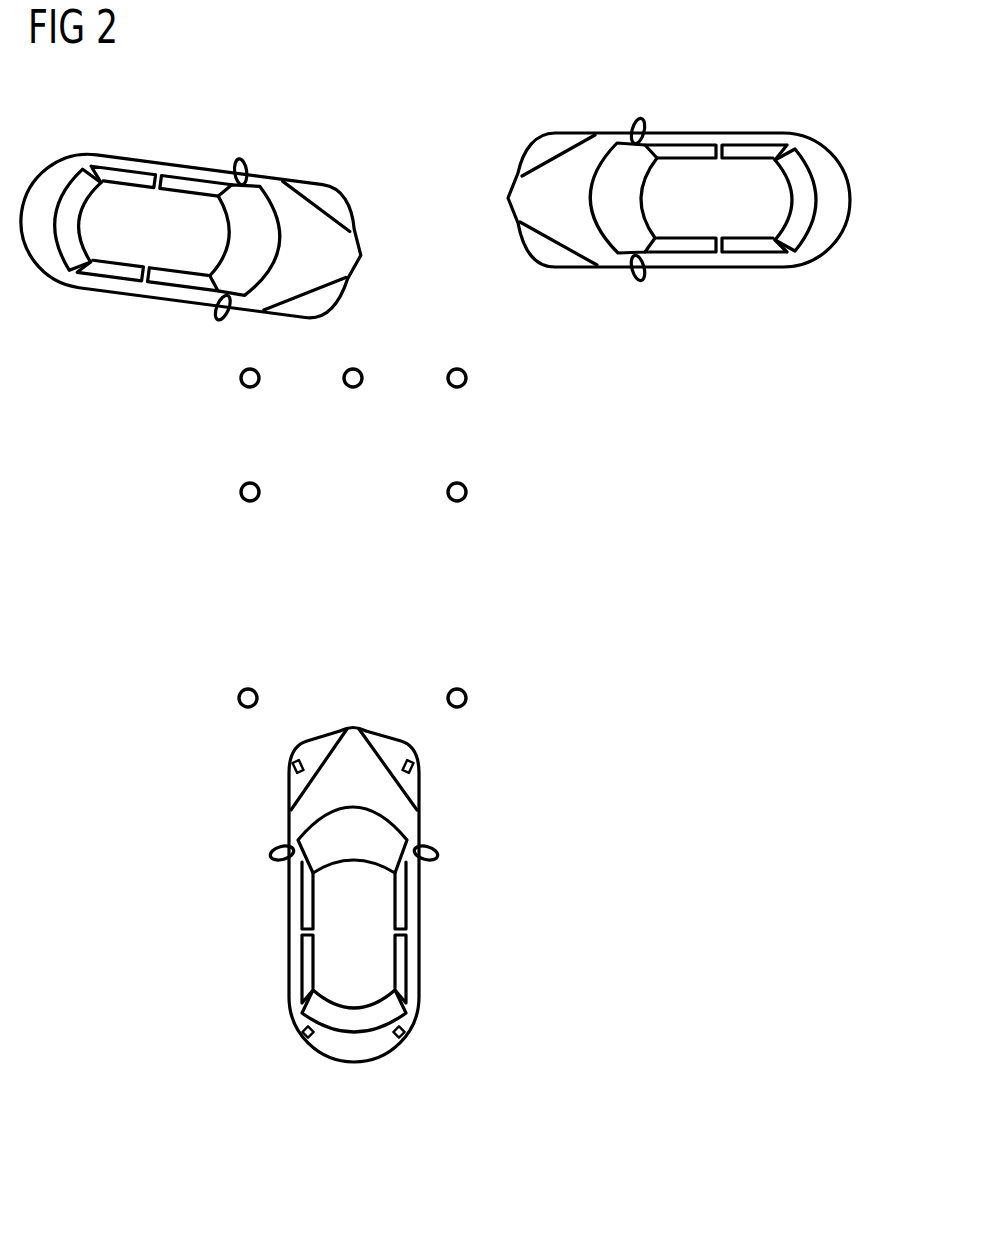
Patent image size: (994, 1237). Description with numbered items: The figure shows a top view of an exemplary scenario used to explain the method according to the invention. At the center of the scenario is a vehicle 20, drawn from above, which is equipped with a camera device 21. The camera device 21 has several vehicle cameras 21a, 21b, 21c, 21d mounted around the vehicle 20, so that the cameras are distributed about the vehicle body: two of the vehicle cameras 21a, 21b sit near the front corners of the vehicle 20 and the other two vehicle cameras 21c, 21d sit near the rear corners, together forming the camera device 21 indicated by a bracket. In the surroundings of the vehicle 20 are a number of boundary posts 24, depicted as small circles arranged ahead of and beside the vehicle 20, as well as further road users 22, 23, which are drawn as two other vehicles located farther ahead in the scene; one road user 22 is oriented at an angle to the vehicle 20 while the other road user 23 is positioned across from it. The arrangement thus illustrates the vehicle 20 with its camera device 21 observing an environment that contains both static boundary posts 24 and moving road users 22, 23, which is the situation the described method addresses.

The vehicle 20 is at (415, 882).
The camera device 21 is at (444, 879).
The vehicle camera 21a is at (303, 765).
The vehicle camera 21b is at (417, 768).
The vehicle camera 21c is at (465, 1001).
The vehicle camera 21d is at (308, 1022).
The road user 22 is at (136, 160).
The road user 23 is at (688, 132).
The boundary posts 24 is at (250, 388).